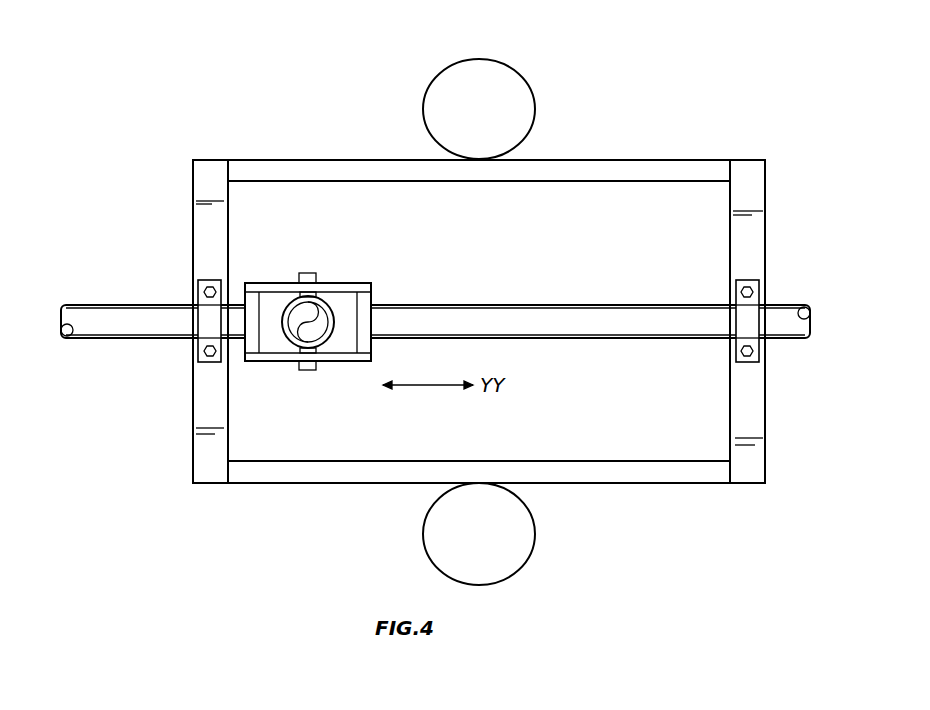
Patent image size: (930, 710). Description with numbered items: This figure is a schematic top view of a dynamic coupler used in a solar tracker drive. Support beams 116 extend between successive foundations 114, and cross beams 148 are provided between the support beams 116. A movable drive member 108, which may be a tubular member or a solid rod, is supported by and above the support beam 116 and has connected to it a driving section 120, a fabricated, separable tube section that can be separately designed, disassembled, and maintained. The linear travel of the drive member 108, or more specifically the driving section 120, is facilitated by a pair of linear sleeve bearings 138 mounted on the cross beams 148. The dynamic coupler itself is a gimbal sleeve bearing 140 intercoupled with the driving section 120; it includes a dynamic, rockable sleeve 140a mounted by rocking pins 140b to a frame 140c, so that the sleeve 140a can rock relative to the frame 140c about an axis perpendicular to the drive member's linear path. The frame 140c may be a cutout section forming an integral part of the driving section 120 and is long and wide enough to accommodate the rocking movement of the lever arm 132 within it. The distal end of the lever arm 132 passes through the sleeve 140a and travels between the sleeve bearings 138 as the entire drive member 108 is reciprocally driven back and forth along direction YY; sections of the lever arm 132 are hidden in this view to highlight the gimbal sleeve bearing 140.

The movable drive member 108 is at (60, 330).
The foundations 114 is at (503, 88).
The support beam 116 is at (655, 171).
The driving section 120 is at (563, 318).
The lever arm 132 is at (302, 330).
The linear sleeve bearings 138 is at (197, 298).
The gimbal sleeve bearing 140 is at (367, 320).
The rockable sleeve 140a is at (342, 320).
The rocking pins 140b is at (308, 272).
The frame 140c is at (354, 361).
The cross beams 148 is at (202, 228).